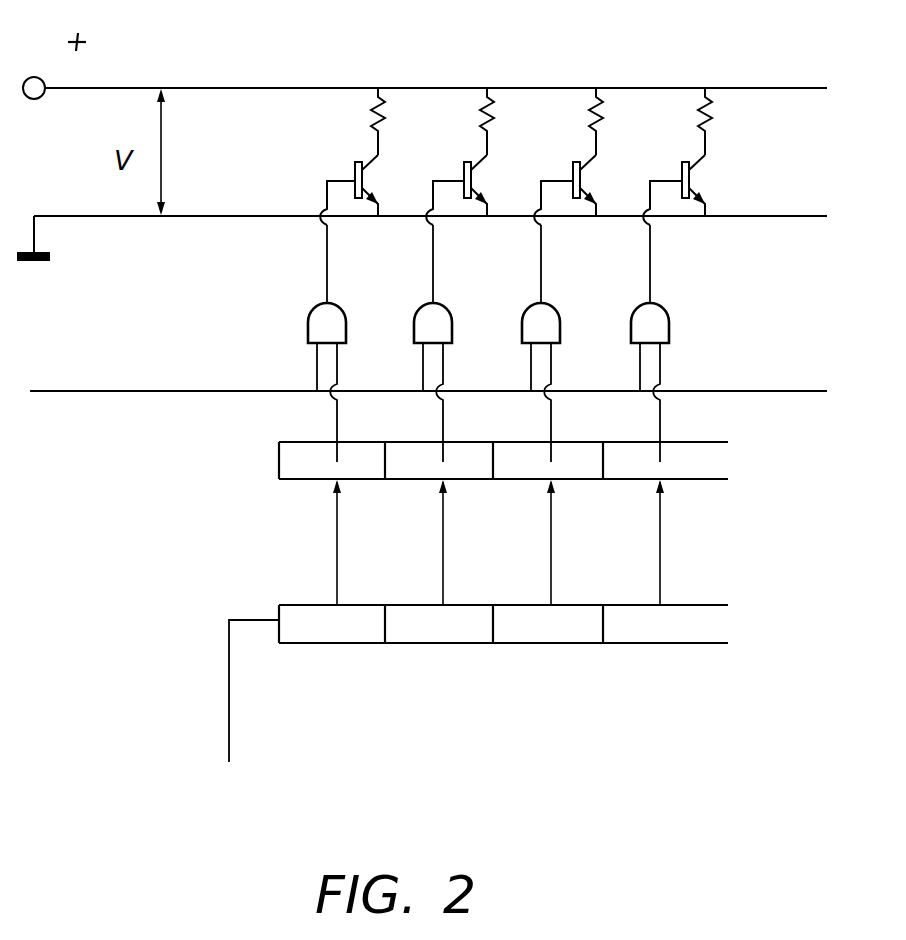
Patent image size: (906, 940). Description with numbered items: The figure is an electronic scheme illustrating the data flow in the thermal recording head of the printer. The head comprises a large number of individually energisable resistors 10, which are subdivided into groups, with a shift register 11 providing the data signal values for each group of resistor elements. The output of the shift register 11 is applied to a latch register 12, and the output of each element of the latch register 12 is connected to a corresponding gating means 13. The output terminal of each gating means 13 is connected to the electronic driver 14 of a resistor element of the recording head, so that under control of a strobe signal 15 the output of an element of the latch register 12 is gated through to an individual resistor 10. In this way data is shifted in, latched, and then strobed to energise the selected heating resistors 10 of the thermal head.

The individually energisable resistor 10 is at (372, 112).
The shift register 11 is at (290, 618).
The latch register 12 is at (290, 462).
The gating means 13 is at (325, 320).
The electronic driver 14 is at (351, 171).
The strobe signal 15 is at (272, 389).